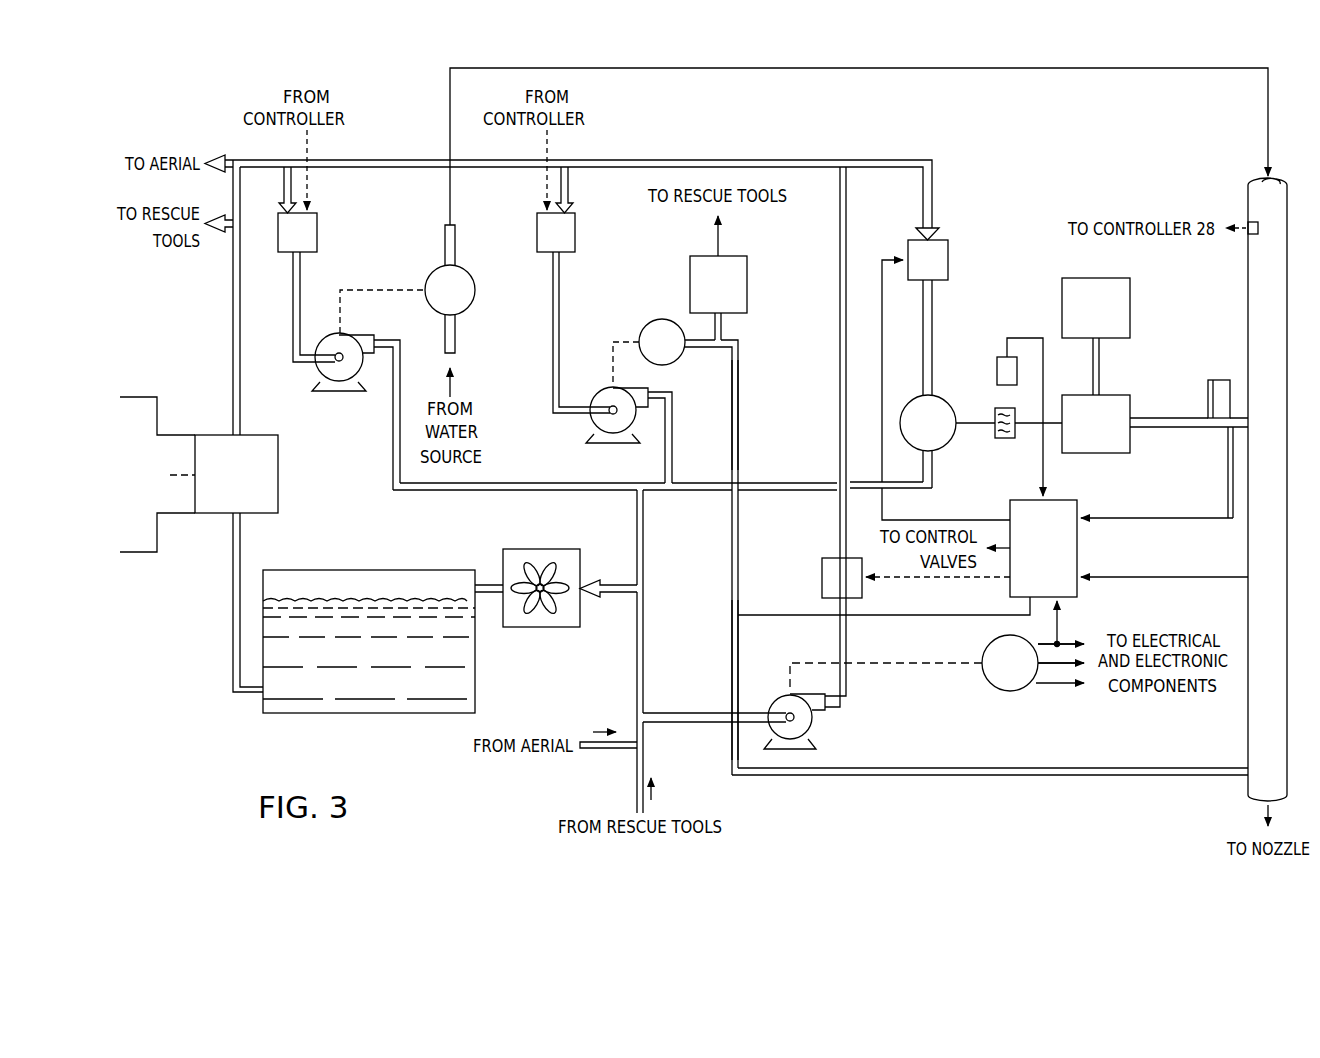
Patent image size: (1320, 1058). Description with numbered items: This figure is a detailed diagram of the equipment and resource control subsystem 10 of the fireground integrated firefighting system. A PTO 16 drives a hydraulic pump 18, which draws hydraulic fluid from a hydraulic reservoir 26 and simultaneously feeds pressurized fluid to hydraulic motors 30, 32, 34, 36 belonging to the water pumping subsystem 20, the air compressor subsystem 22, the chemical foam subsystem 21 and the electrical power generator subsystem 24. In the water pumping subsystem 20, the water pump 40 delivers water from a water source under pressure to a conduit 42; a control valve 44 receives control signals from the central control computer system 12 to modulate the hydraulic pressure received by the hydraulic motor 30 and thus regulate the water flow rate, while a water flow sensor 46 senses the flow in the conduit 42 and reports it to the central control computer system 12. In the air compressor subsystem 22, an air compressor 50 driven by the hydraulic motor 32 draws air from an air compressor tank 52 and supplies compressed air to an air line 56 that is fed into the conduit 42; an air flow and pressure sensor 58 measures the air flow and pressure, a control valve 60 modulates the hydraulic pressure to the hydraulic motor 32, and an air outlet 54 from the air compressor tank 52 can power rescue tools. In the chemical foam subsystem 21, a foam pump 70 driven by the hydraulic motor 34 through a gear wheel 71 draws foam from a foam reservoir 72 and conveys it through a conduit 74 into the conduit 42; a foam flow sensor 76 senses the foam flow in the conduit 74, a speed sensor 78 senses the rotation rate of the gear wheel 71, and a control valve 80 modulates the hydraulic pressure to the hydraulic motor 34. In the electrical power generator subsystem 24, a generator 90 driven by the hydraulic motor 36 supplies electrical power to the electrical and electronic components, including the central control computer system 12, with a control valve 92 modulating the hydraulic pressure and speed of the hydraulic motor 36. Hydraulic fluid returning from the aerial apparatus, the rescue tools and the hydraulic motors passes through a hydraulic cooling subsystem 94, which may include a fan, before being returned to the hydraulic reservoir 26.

The fire apparatus system 10 is at (140, 110).
The central control computer system 12 is at (1057, 571).
The PTO 16 is at (155, 488).
The hydraulic pump 18 is at (215, 516).
The water pumping subsystem 20 is at (412, 248).
The chemical foam subsystem 21 is at (1026, 306).
The air compressor subsystem 22 is at (768, 266).
The electrical power generator subsystem 24 is at (889, 703).
The hydraulic reservoir 26 is at (366, 570).
The hydraulic motor 30 is at (338, 392).
The hydraulic motor 32 is at (600, 390).
The hydraulic motor 34 is at (939, 436).
The hydraulic motor 36 is at (777, 696).
The water pump 40 is at (477, 290).
The conduit 42 is at (1248, 318).
The control valve 44 is at (285, 255).
The water flow sensor 46 is at (1260, 238).
The air compressor 50 is at (659, 318).
The air compressor tank 52 is at (729, 296).
The air outlet 54 is at (715, 242).
The air line 56 is at (741, 376).
The air flow and pressure sensor 58 is at (730, 613).
The control valve 60 is at (577, 226).
The foam pump 70 is at (1107, 437).
The gear wheel 71 is at (1003, 441).
The foam reservoir 72 is at (1107, 320).
The conduit 74 is at (1183, 430).
The foam flow sensor 76 is at (1206, 408).
The speed sensor 78 is at (994, 369).
The control valve 80 is at (951, 256).
The generator 90 is at (1021, 675).
The control valve 92 is at (820, 586).
The hydraulic cooling subsystem 94 is at (536, 548).